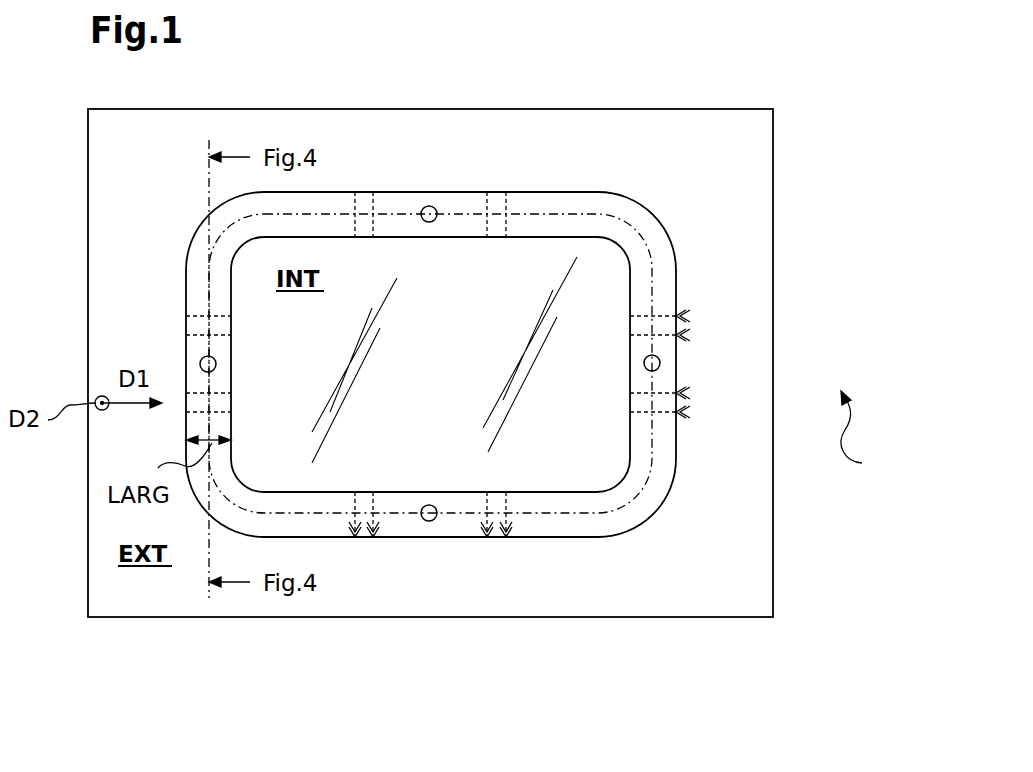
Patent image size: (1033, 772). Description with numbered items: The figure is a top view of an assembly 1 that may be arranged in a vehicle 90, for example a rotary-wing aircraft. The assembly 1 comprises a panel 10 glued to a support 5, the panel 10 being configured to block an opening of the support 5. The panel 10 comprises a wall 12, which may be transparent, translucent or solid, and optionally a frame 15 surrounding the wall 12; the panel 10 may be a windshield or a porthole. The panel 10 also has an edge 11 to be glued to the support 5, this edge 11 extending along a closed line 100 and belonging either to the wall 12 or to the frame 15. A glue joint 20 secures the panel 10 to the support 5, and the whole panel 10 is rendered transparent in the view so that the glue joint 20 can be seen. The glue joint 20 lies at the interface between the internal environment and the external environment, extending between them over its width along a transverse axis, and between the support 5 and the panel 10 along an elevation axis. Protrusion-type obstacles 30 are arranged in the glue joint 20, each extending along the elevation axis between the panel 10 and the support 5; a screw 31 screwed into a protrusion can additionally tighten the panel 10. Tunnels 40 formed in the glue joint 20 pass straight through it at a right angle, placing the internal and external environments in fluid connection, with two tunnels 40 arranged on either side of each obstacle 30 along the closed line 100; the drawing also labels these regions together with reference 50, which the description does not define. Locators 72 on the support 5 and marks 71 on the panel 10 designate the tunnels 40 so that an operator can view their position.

The assembly 1 is at (460, 319).
The support 5 is at (750, 580).
The panel 10 is at (463, 373).
The edge 11 is at (453, 340).
The frame 15 is at (630, 213).
The wall 12 is at (536, 262).
The glue joint 20 is at (652, 493).
The obstacle 30 is at (479, 369).
The screw 31 is at (216, 364).
The tunnel 40 is at (222, 403).
The attachment regions 50 is at (388, 364).
The mark 71 is at (503, 527).
The locator 72 is at (702, 417).
The vehicle 90 is at (867, 433).
The closed line 100 is at (578, 515).